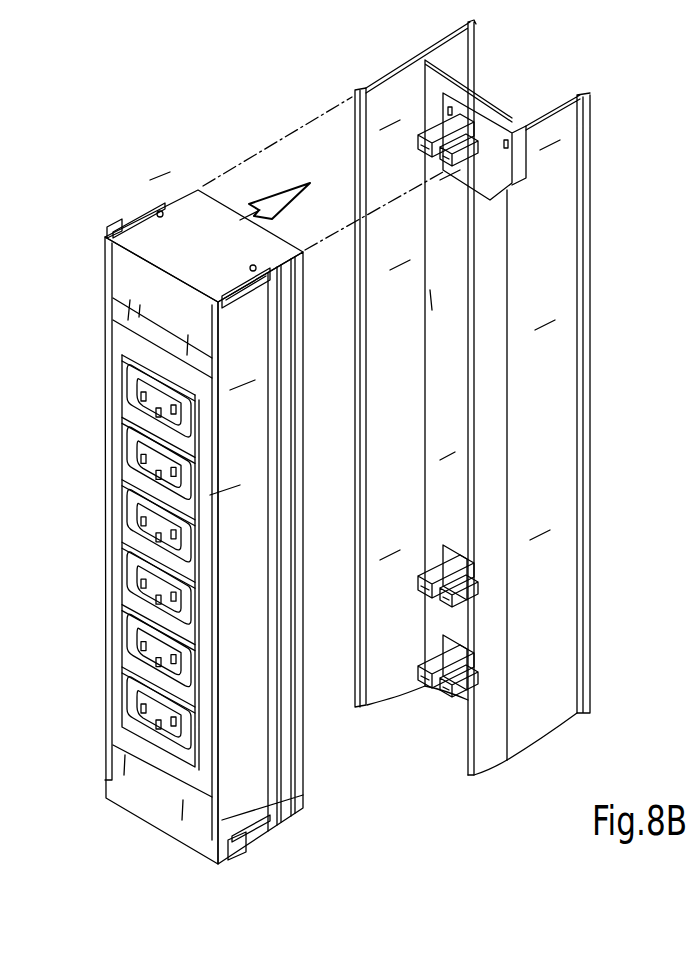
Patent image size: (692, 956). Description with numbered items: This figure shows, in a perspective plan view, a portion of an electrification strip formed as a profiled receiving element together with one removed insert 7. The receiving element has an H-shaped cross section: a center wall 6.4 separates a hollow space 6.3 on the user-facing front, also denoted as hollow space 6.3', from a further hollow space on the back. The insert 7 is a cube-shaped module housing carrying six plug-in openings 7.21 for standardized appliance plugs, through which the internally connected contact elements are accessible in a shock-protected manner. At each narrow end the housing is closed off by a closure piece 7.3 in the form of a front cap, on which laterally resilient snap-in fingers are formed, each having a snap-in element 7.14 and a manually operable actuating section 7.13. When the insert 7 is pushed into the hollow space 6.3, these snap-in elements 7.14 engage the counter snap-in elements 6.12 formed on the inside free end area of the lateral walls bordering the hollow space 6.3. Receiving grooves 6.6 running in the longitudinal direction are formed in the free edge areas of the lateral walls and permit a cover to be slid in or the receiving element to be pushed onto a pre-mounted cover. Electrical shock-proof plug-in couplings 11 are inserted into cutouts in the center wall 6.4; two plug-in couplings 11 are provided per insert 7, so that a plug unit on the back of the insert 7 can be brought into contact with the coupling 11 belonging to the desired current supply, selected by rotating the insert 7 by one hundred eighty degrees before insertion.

The insert 7 is at (102, 610).
The closure piece 7.3 is at (197, 208).
The actuating section 7.13 is at (123, 221).
The snap-in element 7.14 is at (140, 213).
The plug-in opening 7.21 is at (130, 443).
The hollow space 6.3 is at (430, 424).
The hollow space 6.3' is at (590, 387).
The center wall 6.4 is at (515, 123).
The receiving groove 6.6 is at (580, 90).
The counter snap-in element 6.12 is at (373, 707).
The plug-in coupling 11 is at (473, 122).